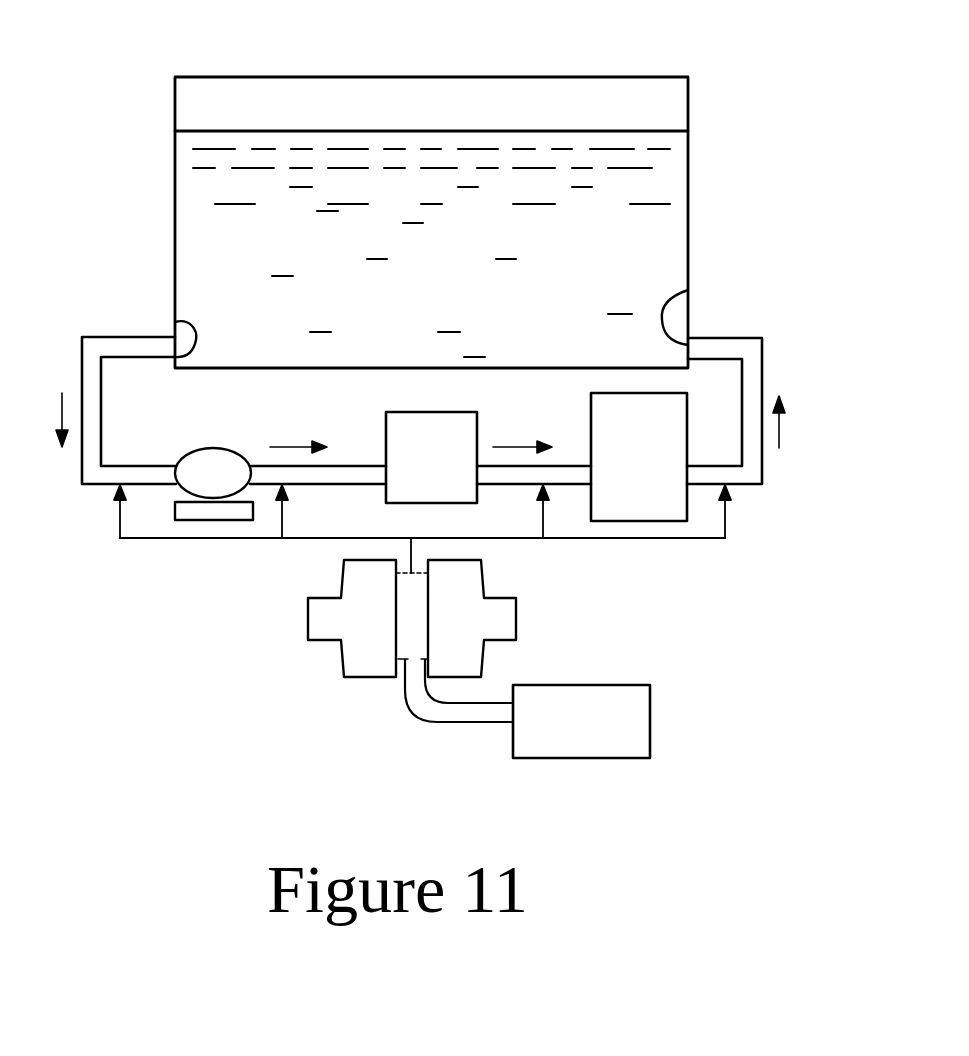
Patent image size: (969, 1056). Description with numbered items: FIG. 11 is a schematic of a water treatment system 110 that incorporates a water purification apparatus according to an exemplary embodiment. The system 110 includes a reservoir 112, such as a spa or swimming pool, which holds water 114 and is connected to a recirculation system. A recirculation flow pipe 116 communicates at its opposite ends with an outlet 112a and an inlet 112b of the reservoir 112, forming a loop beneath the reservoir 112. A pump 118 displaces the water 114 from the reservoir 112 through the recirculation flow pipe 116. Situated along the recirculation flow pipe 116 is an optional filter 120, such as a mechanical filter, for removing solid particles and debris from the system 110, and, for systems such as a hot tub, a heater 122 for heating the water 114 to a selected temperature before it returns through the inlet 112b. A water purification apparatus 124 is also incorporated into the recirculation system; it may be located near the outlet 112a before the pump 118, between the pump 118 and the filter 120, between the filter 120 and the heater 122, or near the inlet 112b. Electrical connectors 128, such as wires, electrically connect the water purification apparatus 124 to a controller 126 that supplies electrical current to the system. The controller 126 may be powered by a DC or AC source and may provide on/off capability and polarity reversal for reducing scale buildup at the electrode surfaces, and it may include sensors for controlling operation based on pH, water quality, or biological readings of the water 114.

The water treatment system 110 is at (707, 150).
The reservoir 112 is at (175, 185).
The outlet 112a is at (175, 322).
The inlet 112b is at (688, 290).
The water 114 is at (233, 258).
The recirculation flow pipe 116 is at (82, 340).
The pump 118 is at (213, 465).
The filter 120 is at (392, 467).
The heater 122 is at (611, 448).
The water purification apparatus 124 is at (352, 648).
The controller 126 is at (534, 705).
The electrical connectors 128 is at (405, 697).